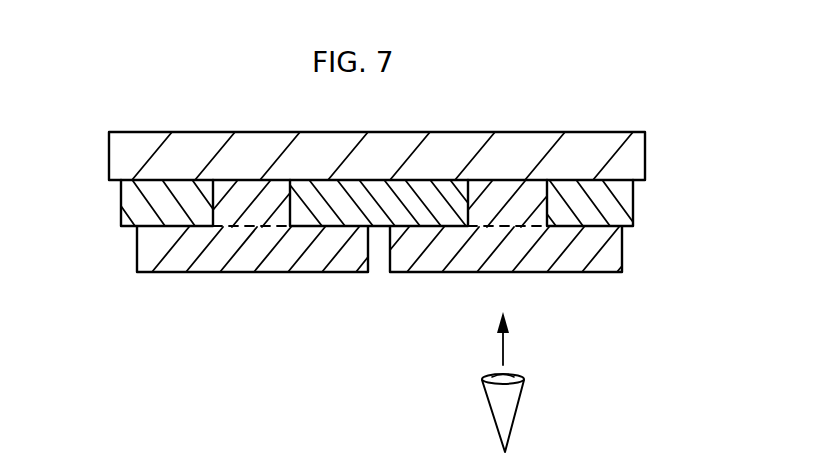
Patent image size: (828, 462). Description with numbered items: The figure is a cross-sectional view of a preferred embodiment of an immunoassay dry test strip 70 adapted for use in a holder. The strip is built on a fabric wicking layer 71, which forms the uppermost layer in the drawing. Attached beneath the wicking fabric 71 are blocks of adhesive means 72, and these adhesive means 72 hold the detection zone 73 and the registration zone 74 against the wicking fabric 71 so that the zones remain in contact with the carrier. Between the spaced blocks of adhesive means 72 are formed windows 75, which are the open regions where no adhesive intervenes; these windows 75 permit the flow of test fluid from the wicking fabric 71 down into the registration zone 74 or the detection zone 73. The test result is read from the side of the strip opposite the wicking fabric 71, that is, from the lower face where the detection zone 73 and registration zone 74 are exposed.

The dry test strip 70 is at (645, 126).
The fabric wicking layer 71 is at (122, 152).
The adhesive means 72 is at (122, 205).
The detection zone 73 is at (613, 262).
The registration zone 74 is at (152, 256).
The windows 75 is at (231, 205).